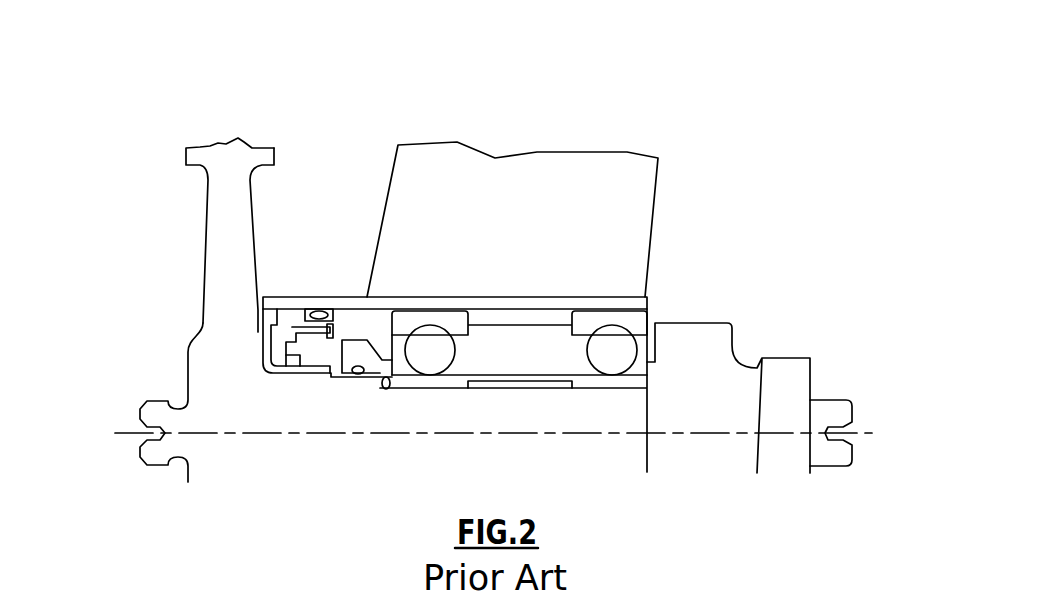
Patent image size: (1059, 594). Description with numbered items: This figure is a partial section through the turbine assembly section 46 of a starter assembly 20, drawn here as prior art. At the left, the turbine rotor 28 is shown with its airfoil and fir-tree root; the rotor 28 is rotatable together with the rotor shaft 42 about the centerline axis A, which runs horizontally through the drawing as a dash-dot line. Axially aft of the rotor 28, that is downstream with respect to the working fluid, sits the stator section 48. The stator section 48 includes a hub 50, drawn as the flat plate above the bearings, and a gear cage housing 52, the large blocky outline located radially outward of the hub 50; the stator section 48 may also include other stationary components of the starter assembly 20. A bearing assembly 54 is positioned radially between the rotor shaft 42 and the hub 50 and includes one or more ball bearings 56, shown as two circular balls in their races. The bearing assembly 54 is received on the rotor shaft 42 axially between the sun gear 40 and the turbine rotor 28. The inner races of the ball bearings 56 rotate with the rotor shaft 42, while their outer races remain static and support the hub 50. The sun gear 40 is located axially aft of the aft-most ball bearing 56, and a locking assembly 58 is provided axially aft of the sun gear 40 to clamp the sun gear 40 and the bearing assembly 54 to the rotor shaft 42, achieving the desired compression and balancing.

The starter assembly 20 is at (200, 81).
The turbine rotor 28 is at (213, 328).
The sun gear 40 is at (698, 348).
The rotor shaft 42 is at (293, 423).
The turbine assembly section 46 is at (170, 295).
The stator section 48 is at (343, 200).
The hub 50 is at (354, 309).
The gear cage housing 52 is at (622, 198).
The bearing assembly 54 is at (457, 402).
The ball bearings 56 is at (598, 350).
The locking assembly 58 is at (832, 367).